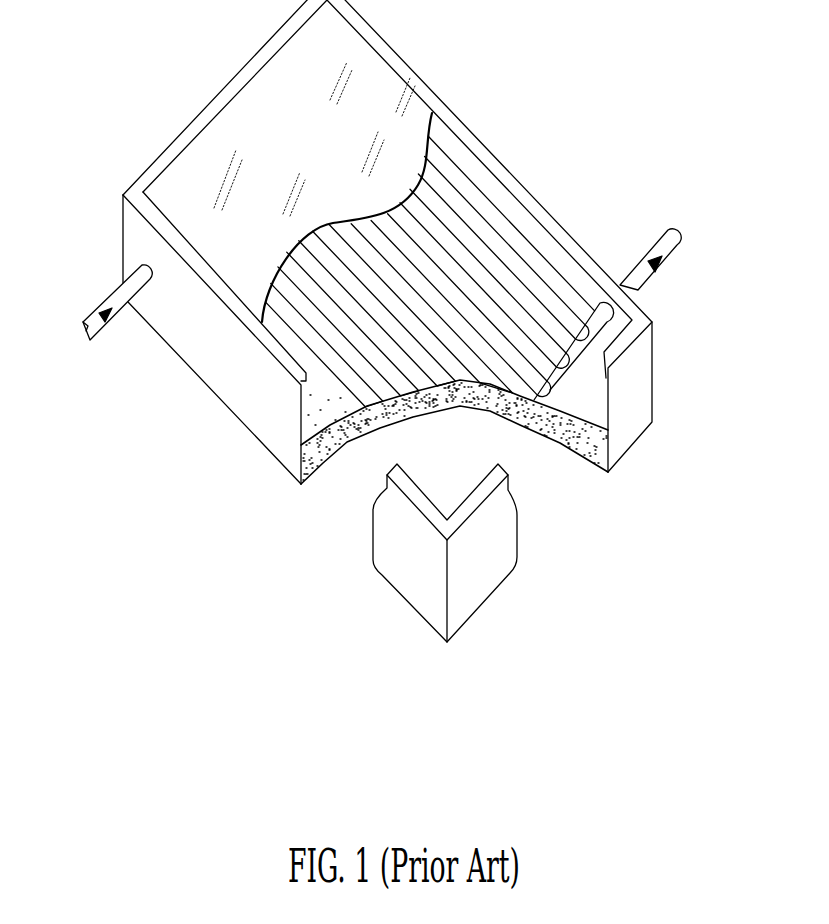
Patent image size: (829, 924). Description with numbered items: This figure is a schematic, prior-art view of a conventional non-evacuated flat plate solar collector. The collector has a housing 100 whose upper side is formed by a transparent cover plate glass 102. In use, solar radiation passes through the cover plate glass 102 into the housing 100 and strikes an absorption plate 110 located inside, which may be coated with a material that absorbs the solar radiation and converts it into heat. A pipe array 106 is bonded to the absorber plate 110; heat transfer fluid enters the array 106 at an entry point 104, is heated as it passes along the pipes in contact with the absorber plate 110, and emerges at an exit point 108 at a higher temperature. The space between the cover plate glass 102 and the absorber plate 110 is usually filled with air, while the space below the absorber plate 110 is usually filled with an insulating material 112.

The housing 100 is at (212, 150).
The transparent cover plate glass 102 is at (121, 230).
The entry point 104 is at (82, 335).
The pipe array 106 is at (532, 273).
The exit point 108 is at (673, 237).
The absorption plate 110 is at (577, 456).
The insulating material 112 is at (550, 440).